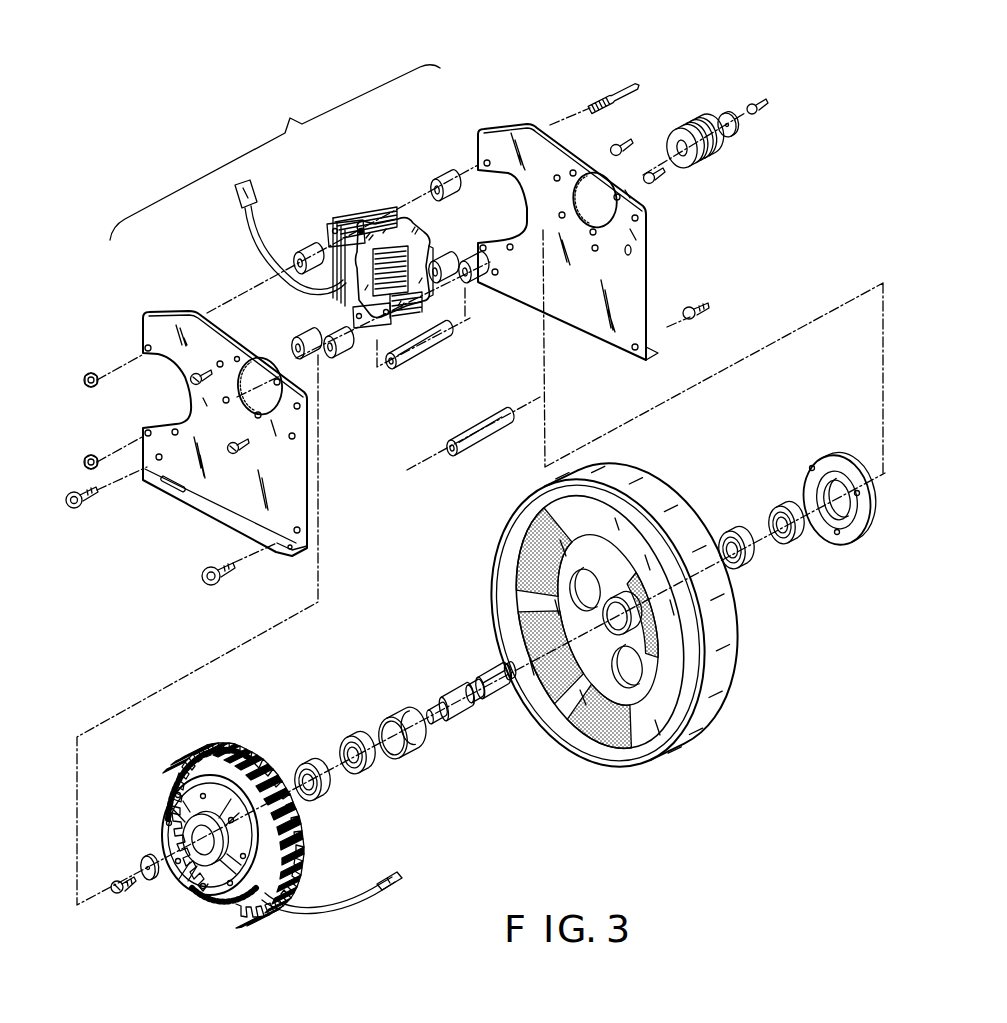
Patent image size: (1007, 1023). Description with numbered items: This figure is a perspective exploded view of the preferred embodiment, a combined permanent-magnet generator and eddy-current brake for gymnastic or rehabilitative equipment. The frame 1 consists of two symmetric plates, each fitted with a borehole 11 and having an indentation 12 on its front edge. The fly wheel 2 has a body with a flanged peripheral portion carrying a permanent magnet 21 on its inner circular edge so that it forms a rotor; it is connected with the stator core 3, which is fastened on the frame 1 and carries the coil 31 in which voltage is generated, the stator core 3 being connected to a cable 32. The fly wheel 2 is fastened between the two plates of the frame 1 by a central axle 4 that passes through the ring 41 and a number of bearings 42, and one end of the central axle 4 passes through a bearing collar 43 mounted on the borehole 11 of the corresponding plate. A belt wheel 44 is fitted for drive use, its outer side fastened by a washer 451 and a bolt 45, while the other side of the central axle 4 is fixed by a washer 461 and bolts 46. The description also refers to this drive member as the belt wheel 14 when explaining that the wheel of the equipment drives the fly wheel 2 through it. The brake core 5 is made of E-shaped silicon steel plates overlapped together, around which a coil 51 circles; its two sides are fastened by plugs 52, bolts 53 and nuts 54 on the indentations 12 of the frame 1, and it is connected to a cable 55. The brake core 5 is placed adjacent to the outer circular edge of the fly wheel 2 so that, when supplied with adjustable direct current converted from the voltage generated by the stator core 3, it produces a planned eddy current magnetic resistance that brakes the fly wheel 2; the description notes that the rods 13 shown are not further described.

The frame 1 is at (275, 152).
The fly wheel 2 is at (691, 757).
The permanent magnet 21 is at (600, 707).
The stator core 3 is at (213, 934).
The coil 31 is at (258, 912).
The cable 32 is at (352, 908).
The central axle 4 is at (470, 710).
The ring 41 is at (398, 714).
The bearings 42 is at (353, 718).
The bearing collar 43 is at (825, 462).
The belt wheel 44 is at (683, 125).
The pulley screw 45 is at (753, 101).
The washer 451 is at (737, 132).
The bolts 46 is at (123, 893).
The washer 461 is at (154, 880).
The brake core 5 is at (370, 190).
The coil 51 is at (337, 249).
The plugs 52 is at (440, 180).
The bolts 53 is at (627, 83).
The nuts 54 is at (94, 372).
The cable 55 is at (250, 228).
The borehole 11 is at (252, 377).
The indentation 12 is at (154, 386).
The connecting rods 13 is at (481, 424).
The belt wheel 14 is at (88, 508).